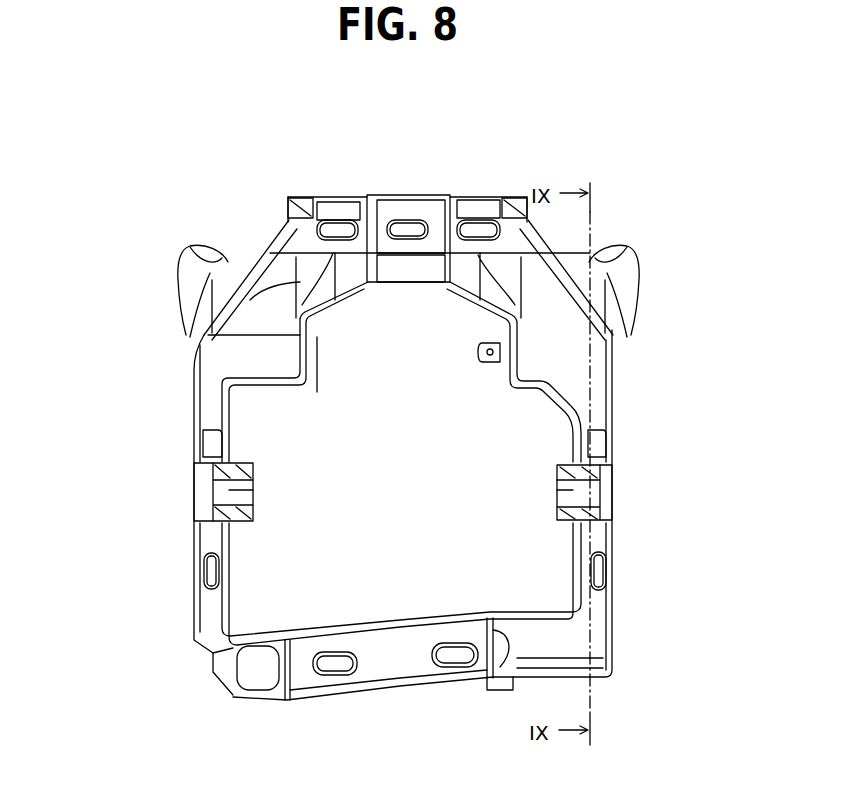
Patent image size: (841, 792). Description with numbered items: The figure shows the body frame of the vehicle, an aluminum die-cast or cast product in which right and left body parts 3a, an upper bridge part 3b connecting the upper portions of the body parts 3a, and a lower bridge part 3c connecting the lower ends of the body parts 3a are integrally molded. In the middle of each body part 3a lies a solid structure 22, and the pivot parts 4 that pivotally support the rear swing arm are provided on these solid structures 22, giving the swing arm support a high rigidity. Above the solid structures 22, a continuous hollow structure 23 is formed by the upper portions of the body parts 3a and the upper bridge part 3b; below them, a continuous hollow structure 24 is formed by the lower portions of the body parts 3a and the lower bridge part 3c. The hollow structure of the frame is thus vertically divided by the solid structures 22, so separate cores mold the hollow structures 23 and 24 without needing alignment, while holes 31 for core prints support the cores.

The body parts 3a is at (188, 390).
The upper bridge part 3b is at (403, 193).
The lower bridge part 3c is at (403, 690).
The pivot parts 4 is at (255, 492).
The solid structures 22 is at (237, 465).
The hollow structure 23 is at (281, 288).
The hollow structure 24 is at (375, 660).
The holes 31 is at (193, 551).